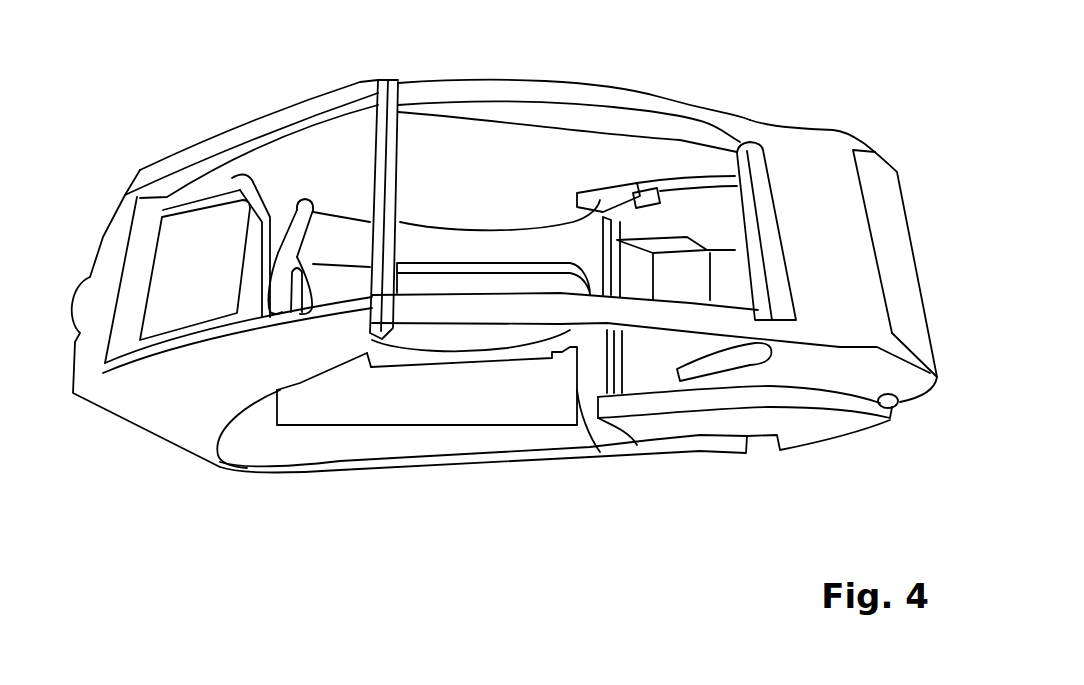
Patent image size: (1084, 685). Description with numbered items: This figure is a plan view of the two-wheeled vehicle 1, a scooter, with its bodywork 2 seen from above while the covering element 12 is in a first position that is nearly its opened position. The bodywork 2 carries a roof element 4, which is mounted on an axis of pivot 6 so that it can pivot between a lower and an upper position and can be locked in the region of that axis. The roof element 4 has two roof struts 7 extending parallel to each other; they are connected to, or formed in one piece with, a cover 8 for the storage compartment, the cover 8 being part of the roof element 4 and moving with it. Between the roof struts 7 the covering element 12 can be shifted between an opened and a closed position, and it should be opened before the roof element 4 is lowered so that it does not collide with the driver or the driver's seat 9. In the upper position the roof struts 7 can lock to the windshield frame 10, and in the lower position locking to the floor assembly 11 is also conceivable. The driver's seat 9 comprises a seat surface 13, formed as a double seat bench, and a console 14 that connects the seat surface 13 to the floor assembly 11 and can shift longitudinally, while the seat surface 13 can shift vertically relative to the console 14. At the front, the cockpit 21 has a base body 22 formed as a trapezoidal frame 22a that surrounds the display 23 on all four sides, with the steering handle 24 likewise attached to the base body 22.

The two-wheeled vehicle 1 is at (612, 80).
The bodywork 2 is at (801, 116).
The roof element 4 is at (683, 87).
The axis of pivot 6 is at (895, 405).
The roof struts 7 is at (500, 92).
The cover 8 is at (873, 172).
The driver's seat 9 is at (445, 380).
The windshield frame 10 is at (253, 126).
The floor assembly 11 is at (473, 407).
The covering element 12 is at (762, 142).
The seat surface 13 is at (503, 338).
The console 14 is at (379, 358).
The cockpit 21 is at (168, 242).
The base body 22 is at (193, 196).
The frame 22a is at (201, 200).
The display 23 is at (168, 318).
The steering handle 24 is at (303, 204).